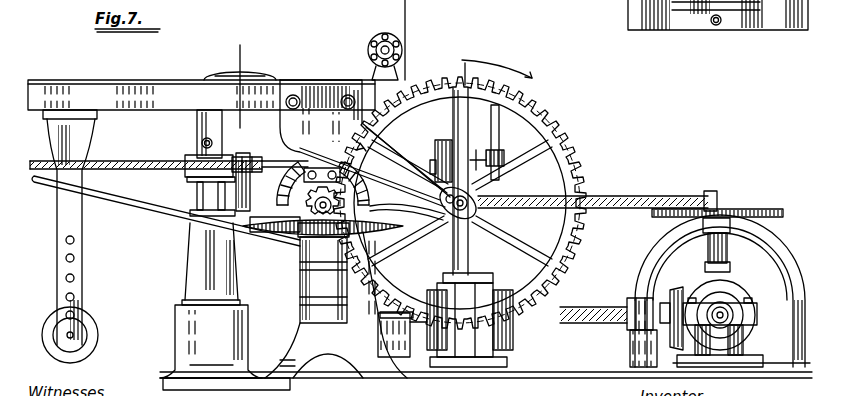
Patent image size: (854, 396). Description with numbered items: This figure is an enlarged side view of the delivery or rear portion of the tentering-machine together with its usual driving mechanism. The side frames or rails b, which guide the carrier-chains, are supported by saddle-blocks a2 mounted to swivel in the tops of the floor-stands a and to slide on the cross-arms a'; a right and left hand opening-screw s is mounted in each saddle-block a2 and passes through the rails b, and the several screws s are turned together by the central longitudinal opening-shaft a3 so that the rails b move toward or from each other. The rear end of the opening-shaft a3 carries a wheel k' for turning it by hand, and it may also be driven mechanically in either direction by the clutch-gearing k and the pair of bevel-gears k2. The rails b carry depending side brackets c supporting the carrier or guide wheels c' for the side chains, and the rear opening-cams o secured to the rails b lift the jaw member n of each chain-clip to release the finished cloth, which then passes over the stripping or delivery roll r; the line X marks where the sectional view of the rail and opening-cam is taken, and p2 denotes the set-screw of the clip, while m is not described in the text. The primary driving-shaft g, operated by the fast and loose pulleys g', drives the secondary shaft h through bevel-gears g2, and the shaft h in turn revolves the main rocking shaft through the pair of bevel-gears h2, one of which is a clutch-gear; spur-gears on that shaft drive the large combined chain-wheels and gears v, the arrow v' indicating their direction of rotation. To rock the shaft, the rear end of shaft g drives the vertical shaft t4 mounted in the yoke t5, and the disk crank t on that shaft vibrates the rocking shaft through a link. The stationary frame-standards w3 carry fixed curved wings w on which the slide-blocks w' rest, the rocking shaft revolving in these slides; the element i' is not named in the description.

The side frames or rails b is at (108, 98).
The floor-stands a is at (207, 300).
The cross-arm a' is at (166, 211).
The saddle-block a2 is at (210, 130).
The opening-shaft a3 is at (148, 158).
The opening-screw s is at (202, 142).
The rear opening-cams o is at (240, 71).
The section line X is at (240, 130).
The depending side brackets c is at (77, 232).
The carrier or guide wheels c' is at (85, 335).
The stripping or delivery roll r is at (372, 46).
The jaw member n is at (413, 40).
The pin m is at (366, 153).
The combined chain-wheels and gears v is at (461, 195).
The direction of rotation v' is at (494, 64).
The clutch-gearing k is at (460, 314).
The wheel k' is at (494, 142).
The pair of bevel-gears k2 is at (450, 132).
The set-screw p2 is at (590, 244).
The disk crank t is at (770, 207).
The vertical shaft t4 is at (732, 266).
The yoke t5 is at (774, 256).
The primary driving-shaft g is at (720, 323).
The fast and loose pulleys g' is at (633, 314).
The bevel-gears g2 is at (678, 287).
The secondary shaft h is at (572, 322).
The pair of bevel-gears h2 is at (292, 182).
The pinion i' is at (299, 192).
The fixed curved wings w is at (268, 212).
The slide-blocks w' is at (323, 216).
The stationary frame-standards w3 is at (336, 288).